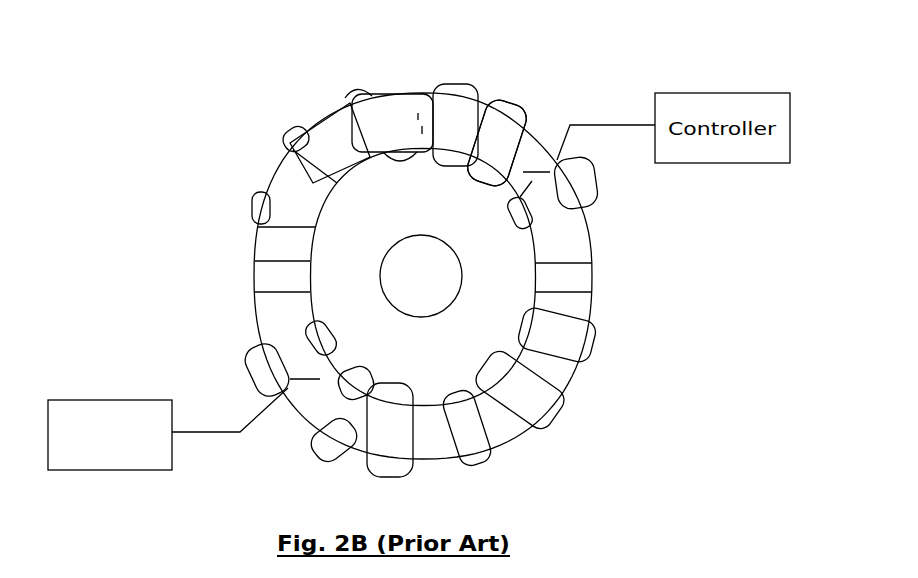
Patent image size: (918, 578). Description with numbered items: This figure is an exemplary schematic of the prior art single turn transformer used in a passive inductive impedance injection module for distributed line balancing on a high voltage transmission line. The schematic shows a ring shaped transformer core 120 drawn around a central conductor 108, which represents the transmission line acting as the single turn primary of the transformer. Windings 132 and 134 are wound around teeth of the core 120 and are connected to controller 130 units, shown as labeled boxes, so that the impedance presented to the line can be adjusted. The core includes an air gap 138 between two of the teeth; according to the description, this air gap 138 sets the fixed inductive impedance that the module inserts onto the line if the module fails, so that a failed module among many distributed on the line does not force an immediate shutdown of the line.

The rotor shaft 108 is at (421, 276).
The stator assembly 120 is at (310, 58).
The controller 130 is at (166, 472).
The coil winding 132 is at (389, 125).
The coil winding 134 is at (497, 105).
The air gap 138 is at (557, 278).